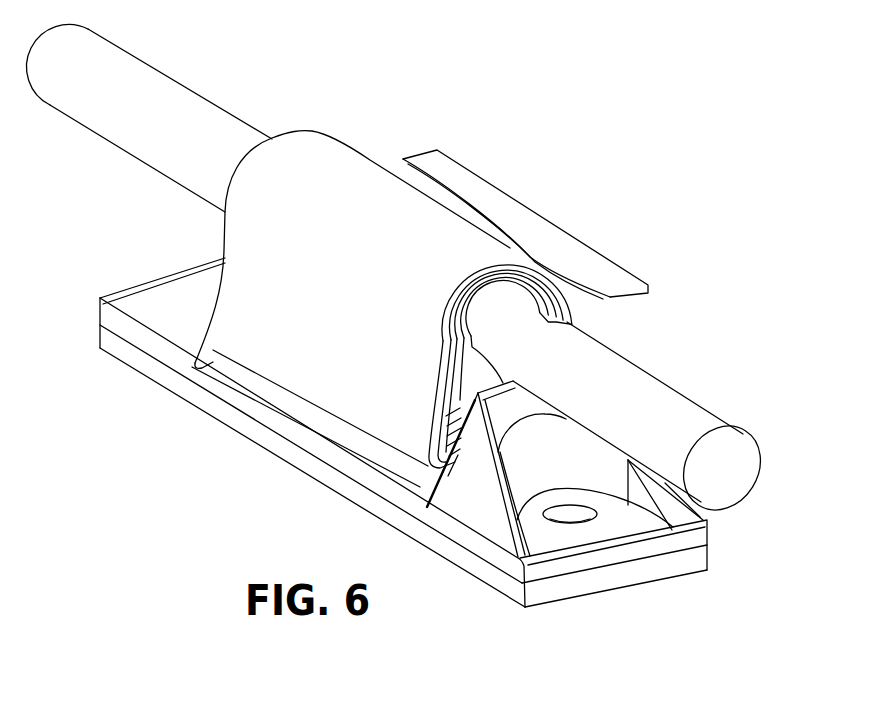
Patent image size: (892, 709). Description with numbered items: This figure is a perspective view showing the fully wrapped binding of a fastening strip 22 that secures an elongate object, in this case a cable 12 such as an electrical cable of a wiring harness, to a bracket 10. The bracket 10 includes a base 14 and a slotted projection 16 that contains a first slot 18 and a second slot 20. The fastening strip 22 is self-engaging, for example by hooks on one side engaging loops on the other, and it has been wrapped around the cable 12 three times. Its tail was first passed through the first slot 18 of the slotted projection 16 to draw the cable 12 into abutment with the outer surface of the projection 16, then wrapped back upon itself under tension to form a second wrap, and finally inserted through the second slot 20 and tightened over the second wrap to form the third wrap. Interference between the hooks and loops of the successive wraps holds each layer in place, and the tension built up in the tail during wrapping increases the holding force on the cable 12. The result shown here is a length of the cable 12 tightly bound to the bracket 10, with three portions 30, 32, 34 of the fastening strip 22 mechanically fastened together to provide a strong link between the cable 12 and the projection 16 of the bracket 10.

The bracket 10 is at (128, 238).
The cable 12 is at (185, 95).
The base 14 is at (313, 480).
The slotted projection 16 is at (482, 500).
The first slot 18 is at (454, 484).
The second slot 20 is at (252, 378).
The fastening strip 22 is at (365, 141).
The first portion of the fastening strip 30 is at (552, 305).
The second portion of the fastening strip 32 is at (538, 278).
The third portion of the fastening strip 34 is at (517, 263).